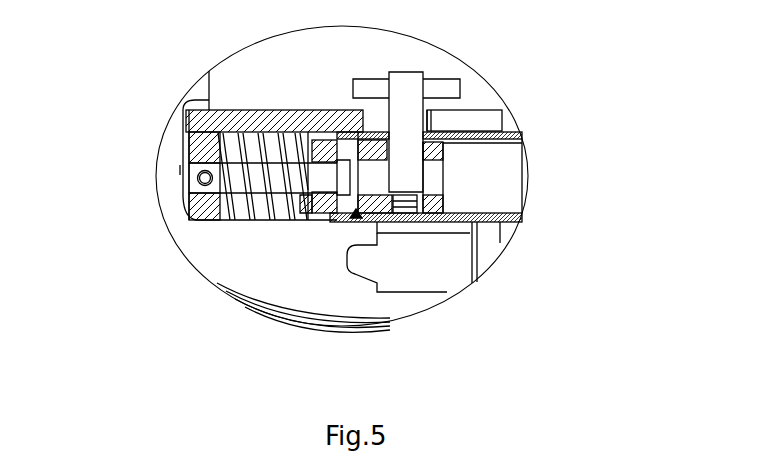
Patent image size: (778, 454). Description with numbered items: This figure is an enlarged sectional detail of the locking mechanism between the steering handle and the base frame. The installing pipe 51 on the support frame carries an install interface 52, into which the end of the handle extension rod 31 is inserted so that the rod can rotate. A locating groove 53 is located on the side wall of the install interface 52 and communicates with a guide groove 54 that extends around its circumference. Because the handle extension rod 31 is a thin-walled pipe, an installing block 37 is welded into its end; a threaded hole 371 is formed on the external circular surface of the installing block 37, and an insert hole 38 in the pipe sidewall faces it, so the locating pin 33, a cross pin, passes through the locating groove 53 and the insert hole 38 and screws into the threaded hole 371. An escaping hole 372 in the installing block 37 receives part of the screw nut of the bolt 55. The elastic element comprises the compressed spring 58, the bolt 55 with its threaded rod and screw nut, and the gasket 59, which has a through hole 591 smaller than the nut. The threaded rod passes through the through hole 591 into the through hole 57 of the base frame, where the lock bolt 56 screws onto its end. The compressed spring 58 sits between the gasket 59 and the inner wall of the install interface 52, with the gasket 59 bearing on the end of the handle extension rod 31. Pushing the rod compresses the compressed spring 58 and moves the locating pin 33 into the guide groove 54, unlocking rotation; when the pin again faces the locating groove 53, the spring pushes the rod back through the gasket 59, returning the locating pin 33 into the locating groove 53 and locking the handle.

The handle extension rod 31 is at (505, 224).
The locating pin 33 is at (432, 115).
The installing block 37 is at (443, 151).
The threaded hole 371 is at (443, 163).
The escaping hole 372 is at (433, 190).
The insert hole 38 is at (450, 136).
The installing pipe 51 is at (350, 268).
The install interface 52 is at (487, 132).
The locating groove 53 is at (440, 125).
The guide groove 54 is at (399, 112).
The bolt 55 is at (310, 167).
The lock bolt 56 is at (180, 170).
The through hole 57 is at (183, 193).
The compressed spring 58 is at (230, 185).
The gasket 59 is at (328, 212).
The through hole 591 is at (303, 210).